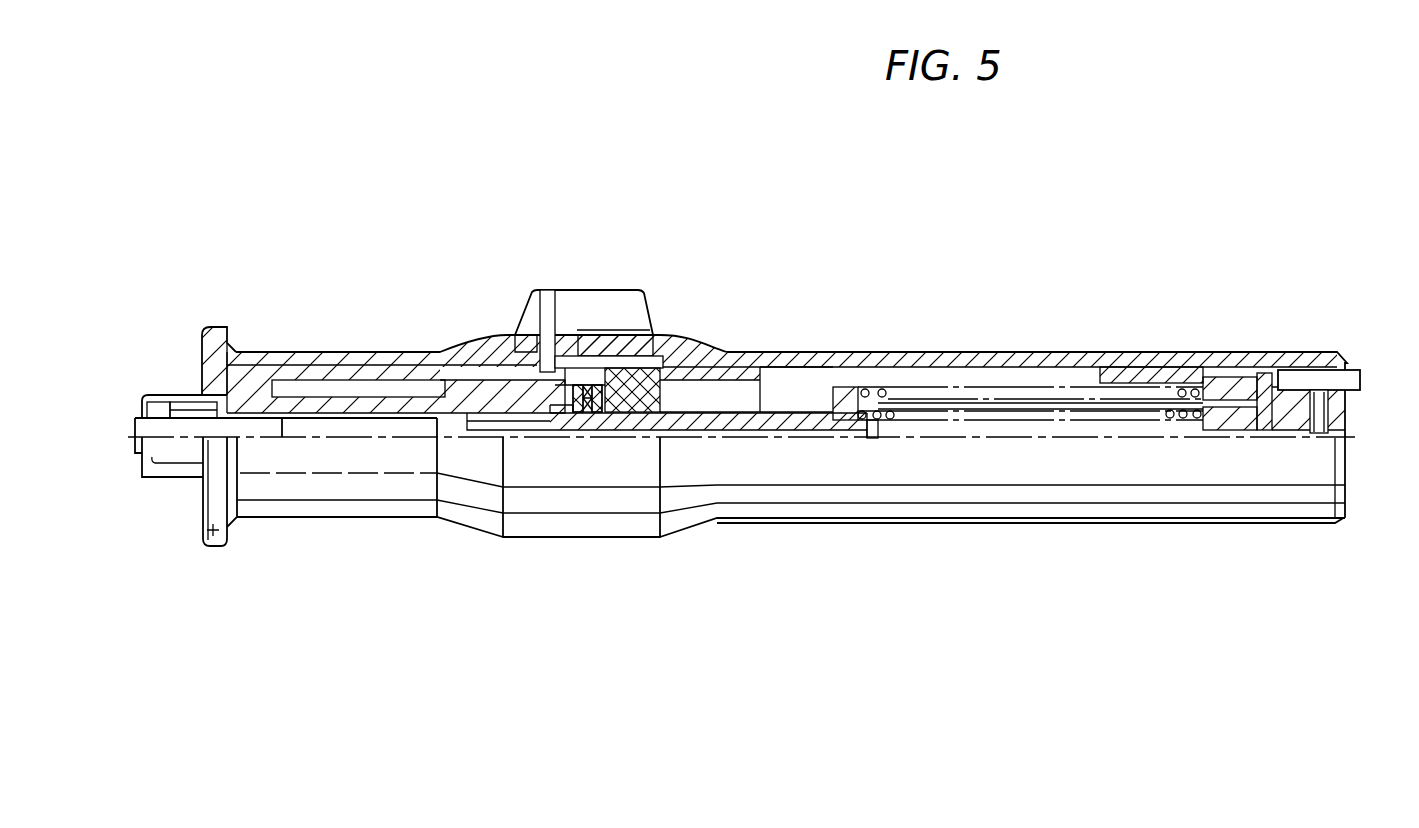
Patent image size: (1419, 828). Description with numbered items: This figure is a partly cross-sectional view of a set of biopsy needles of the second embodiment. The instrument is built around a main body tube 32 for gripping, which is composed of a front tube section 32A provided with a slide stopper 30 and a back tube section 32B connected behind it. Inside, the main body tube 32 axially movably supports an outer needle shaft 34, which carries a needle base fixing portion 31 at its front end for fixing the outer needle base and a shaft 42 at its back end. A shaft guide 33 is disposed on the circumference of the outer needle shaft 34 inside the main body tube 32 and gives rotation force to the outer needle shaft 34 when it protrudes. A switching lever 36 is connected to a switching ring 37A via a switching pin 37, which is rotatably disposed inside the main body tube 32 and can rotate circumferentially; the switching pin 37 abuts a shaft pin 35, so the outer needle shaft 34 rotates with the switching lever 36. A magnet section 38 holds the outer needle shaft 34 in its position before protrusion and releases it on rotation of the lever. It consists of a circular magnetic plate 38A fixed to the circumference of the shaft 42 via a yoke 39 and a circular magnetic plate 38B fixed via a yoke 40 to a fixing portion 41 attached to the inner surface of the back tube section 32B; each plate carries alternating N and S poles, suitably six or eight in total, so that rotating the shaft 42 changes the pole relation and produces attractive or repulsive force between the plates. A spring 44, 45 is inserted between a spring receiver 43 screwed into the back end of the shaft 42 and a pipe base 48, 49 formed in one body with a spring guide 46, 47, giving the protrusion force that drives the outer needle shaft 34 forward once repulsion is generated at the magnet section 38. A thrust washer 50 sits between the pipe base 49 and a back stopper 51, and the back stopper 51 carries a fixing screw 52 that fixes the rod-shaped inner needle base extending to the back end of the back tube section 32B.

The slide stopper 30 is at (213, 546).
The needle base fixing portion 31 is at (163, 462).
The main body tube 32 is at (453, 527).
The front tube section 32A is at (353, 497).
The back tube section 32B is at (982, 358).
The shaft guide 33 is at (340, 377).
The outer needle shaft 34 is at (450, 377).
The shaft pin 35 is at (498, 347).
The switching lever 36 is at (627, 303).
The switching pin 37 is at (545, 313).
The switching ring 37A is at (655, 335).
The magnet section 38 is at (583, 412).
The circular magnetic plate 38A is at (590, 412).
The circular magnetic plate 38B is at (600, 412).
The yoke 39 is at (575, 412).
The yoke 40 is at (672, 348).
The fixing portion 41 is at (742, 370).
The shaft 42 is at (803, 422).
The spring receiver 43 is at (842, 388).
The spring 44 is at (890, 385).
The spring 45 is at (1177, 422).
The spring guide 46 is at (1027, 390).
The spring guide 47 is at (1060, 422).
The pipe base 48 is at (1240, 357).
The pipe base 49 is at (1245, 422).
The thrust washer 50 is at (1263, 366).
The back stopper 51 is at (1160, 365).
The fixing screw 52 is at (1323, 383).